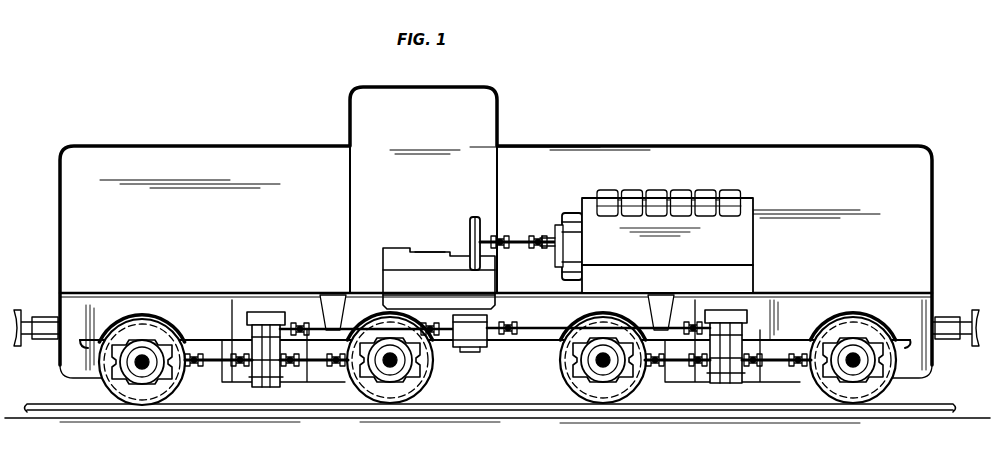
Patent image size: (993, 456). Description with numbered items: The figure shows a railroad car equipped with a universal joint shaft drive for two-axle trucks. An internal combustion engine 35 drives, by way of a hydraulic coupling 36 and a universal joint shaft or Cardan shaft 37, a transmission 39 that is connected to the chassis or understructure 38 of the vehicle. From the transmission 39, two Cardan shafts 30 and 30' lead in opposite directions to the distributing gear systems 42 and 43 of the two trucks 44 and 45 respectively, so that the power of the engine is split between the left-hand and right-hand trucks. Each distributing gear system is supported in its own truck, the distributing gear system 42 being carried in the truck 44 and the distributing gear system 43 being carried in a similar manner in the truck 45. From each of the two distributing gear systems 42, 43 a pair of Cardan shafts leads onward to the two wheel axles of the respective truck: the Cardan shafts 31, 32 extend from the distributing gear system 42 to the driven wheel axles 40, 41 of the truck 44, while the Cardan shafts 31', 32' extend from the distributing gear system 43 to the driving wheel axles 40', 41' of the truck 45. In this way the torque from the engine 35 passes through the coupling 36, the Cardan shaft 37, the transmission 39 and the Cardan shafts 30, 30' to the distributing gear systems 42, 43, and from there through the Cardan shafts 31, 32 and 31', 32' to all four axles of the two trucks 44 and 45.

The Cardan shaft 30 is at (383, 325).
The Cardan shaft 30' is at (598, 319).
The Cardan shaft 31 is at (218, 378).
The Cardan shaft 31' is at (677, 378).
The Cardan shaft 32 is at (314, 377).
The Cardan shaft 32' is at (776, 377).
The internal combustion engine 35 is at (740, 240).
The hydraulic coupling 36 is at (567, 220).
The Cardan shaft 37 is at (519, 240).
The understructure 38 is at (823, 293).
The transmission 39 is at (393, 280).
The driven wheel axle 40 is at (150, 358).
The driving wheel axle 40' is at (588, 360).
The driven wheel axle 41 is at (404, 360).
The driving wheel axle 41' is at (864, 360).
The distributing gear system 42 is at (264, 311).
The distributing gear system 43 is at (733, 309).
The truck 44 is at (243, 378).
The truck 45 is at (704, 378).